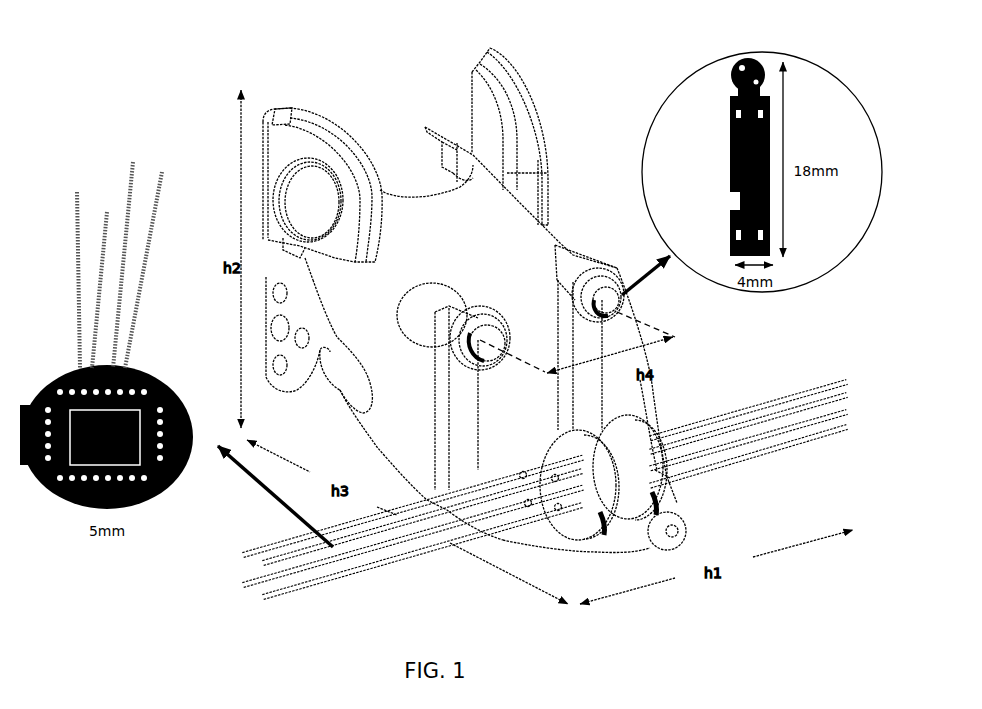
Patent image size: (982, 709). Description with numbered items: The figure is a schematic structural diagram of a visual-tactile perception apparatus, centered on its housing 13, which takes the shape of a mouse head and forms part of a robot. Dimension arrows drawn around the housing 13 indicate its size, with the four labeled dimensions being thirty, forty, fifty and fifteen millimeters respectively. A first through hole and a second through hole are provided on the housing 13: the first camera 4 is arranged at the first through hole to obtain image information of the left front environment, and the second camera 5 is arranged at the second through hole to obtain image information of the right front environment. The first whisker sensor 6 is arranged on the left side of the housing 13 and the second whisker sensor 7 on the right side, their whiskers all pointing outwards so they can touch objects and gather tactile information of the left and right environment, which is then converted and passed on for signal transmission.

The first camera 4 is at (590, 300).
The second camera 5 is at (457, 323).
The first whisker sensor 6 is at (662, 468).
The second whisker sensor 7 is at (608, 495).
The housing 13 is at (477, 237).